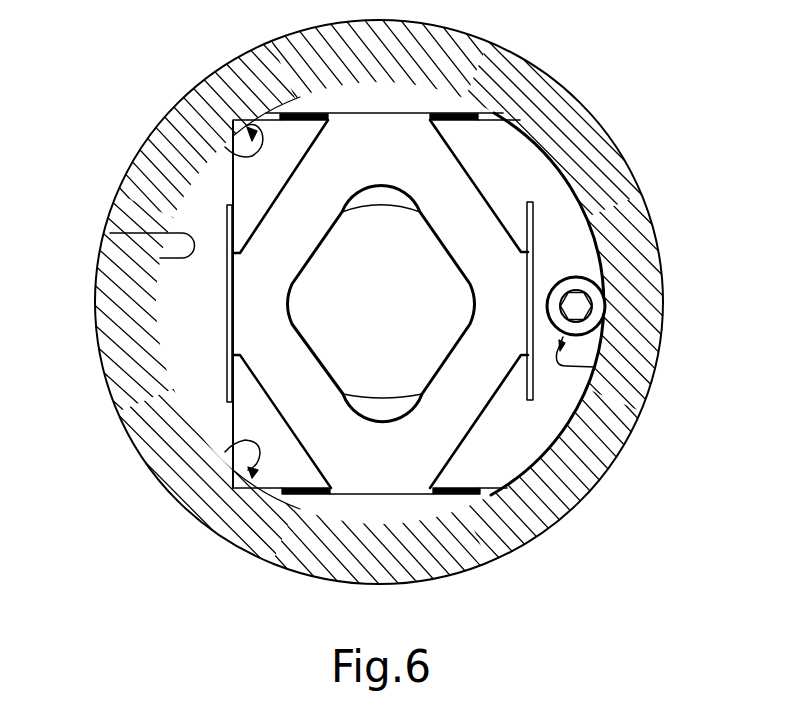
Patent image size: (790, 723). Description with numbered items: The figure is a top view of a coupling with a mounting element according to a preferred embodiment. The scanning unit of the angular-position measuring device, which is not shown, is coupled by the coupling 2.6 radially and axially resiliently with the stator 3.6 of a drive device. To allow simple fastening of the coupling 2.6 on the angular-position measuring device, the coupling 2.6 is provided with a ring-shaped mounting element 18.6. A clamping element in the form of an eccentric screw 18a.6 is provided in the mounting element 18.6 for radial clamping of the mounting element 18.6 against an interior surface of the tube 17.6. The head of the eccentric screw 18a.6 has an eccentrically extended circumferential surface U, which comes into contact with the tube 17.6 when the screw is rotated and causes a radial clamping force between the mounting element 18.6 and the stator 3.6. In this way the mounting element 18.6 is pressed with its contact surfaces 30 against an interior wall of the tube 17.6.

The stator 3.6 is at (260, 60).
The coupling 2.6 is at (285, 285).
The ring-shaped mounting element 18.6 is at (507, 457).
The contact surfaces 30 is at (225, 147).
The tube 17.6 is at (110, 233).
The eccentric screw 18a.6 is at (576, 277).
The eccentrically extended circumferential surface U is at (600, 366).